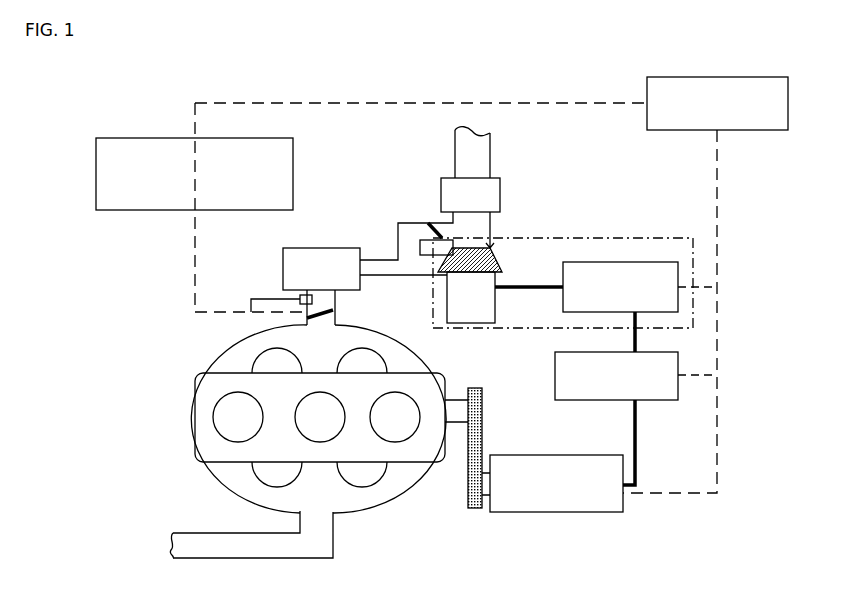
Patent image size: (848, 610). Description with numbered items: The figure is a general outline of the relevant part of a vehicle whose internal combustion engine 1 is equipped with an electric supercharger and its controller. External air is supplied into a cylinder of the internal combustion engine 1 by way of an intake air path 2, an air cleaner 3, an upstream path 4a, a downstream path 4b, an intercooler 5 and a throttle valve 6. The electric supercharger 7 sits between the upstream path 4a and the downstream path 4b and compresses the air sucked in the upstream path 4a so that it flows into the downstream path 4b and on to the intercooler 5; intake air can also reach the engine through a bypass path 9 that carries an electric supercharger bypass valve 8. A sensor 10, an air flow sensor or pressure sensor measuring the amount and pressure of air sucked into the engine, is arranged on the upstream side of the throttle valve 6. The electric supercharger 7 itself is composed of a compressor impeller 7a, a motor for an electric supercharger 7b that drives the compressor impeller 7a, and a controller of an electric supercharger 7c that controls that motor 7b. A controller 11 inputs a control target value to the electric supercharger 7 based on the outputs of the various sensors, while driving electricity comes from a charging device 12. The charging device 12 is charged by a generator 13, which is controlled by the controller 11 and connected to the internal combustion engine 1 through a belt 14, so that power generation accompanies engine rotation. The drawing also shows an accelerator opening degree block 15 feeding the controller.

The internal combustion engine 1 is at (208, 403).
The intake air path 2 is at (468, 155).
The air cleaner 3 is at (448, 197).
The upstream path 4a is at (478, 222).
The downstream path 4b is at (398, 260).
The intercooler 5 is at (283, 268).
The throttle valve 6 is at (338, 313).
The electric supercharger 7 is at (627, 242).
The compressor impeller 7a is at (500, 254).
The motor for electric supercharger 7b is at (447, 296).
The controller of electric supercharger 7c is at (612, 262).
The electric supercharger bypass valve 8 is at (398, 223).
The bypass path 9 is at (398, 242).
The sensor 10 is at (300, 299).
The controller 11 is at (647, 112).
The charging device 12 is at (555, 372).
The generator 13 is at (530, 455).
The belt 14 is at (482, 448).
The accelerator opening degree sensor 15 is at (163, 210).